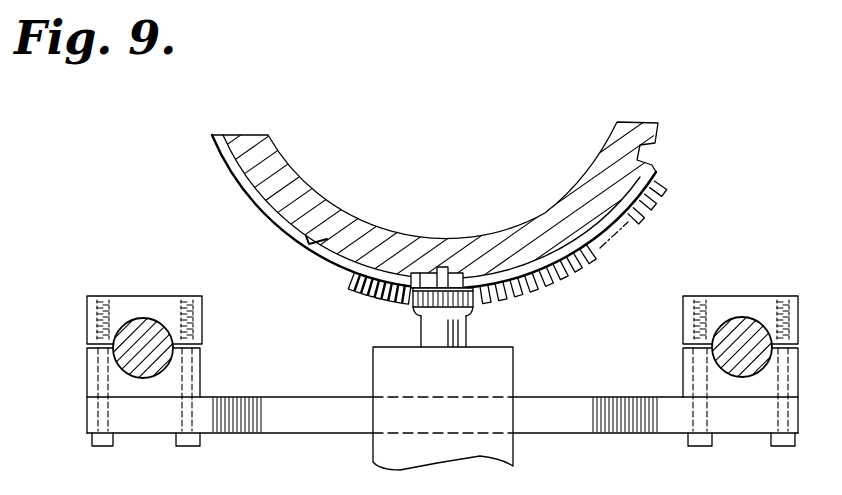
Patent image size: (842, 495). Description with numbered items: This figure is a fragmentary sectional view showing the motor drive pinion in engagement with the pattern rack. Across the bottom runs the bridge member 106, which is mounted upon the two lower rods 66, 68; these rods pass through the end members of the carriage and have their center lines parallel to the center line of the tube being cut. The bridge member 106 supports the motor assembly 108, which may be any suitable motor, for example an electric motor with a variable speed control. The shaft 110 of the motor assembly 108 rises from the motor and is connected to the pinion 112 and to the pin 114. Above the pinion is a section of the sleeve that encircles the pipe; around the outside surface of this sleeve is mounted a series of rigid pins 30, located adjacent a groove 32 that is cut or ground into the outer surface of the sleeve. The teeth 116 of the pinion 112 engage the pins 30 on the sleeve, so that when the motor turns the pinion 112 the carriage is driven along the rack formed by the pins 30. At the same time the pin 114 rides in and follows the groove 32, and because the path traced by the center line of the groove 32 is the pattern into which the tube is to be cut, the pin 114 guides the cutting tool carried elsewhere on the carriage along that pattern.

The rigid pins 30 is at (588, 265).
The groove 32 is at (318, 242).
The rod 66 is at (142, 330).
The rod 68 is at (741, 328).
The bridge member 106 is at (302, 410).
The motor assembly 108 is at (372, 376).
The shaft 110 is at (436, 333).
The pinion 112 is at (470, 305).
The pin 114 is at (447, 267).
The teeth 116 is at (418, 304).